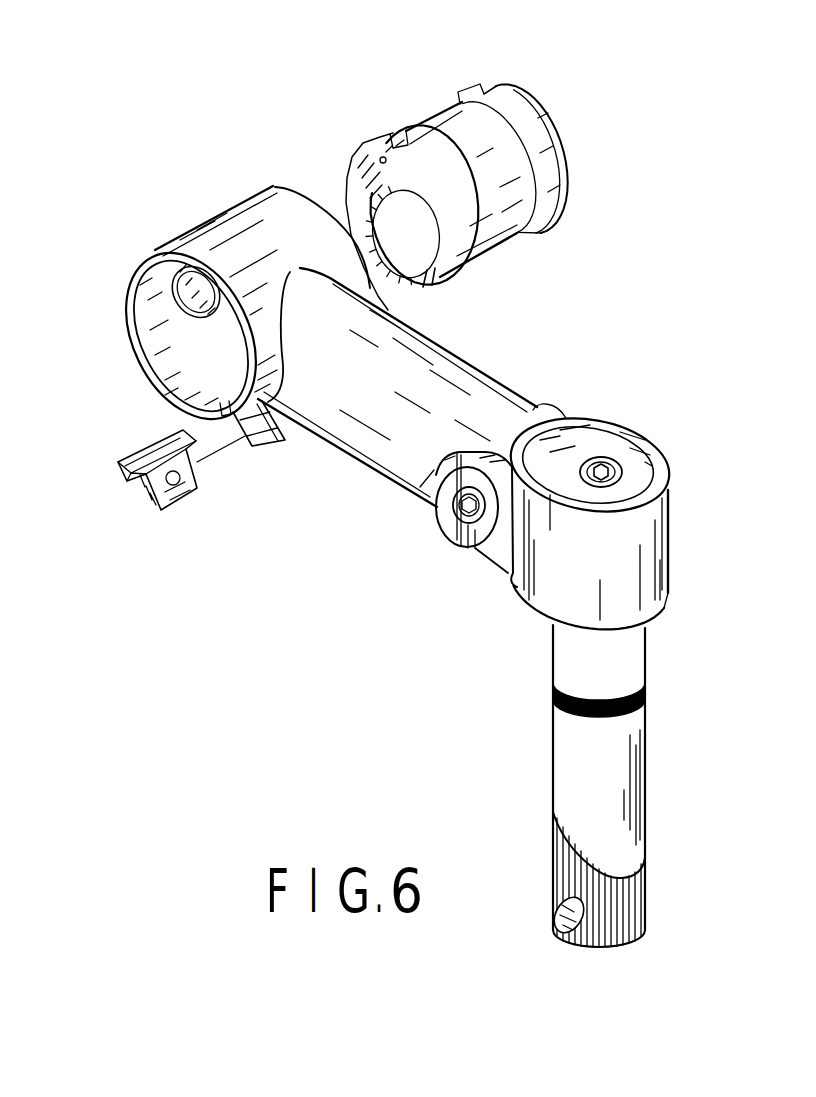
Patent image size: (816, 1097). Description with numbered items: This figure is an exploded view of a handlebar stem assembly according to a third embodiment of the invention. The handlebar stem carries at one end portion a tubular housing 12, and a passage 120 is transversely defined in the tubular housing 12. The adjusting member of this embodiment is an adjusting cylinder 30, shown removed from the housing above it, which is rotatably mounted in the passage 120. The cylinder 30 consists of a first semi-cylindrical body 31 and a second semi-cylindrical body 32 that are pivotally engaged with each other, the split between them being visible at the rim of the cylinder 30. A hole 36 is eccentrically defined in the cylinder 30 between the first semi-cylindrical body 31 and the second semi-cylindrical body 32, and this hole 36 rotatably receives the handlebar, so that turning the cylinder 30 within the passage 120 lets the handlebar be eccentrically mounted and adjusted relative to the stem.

The tubular housing 12 is at (131, 302).
The passage 120 is at (178, 363).
The adjusting cylinder 30 is at (384, 107).
The first semi-cylindrical body 31 is at (437, 284).
The second semi-cylindrical body 32 is at (360, 196).
The hole 36 is at (398, 217).